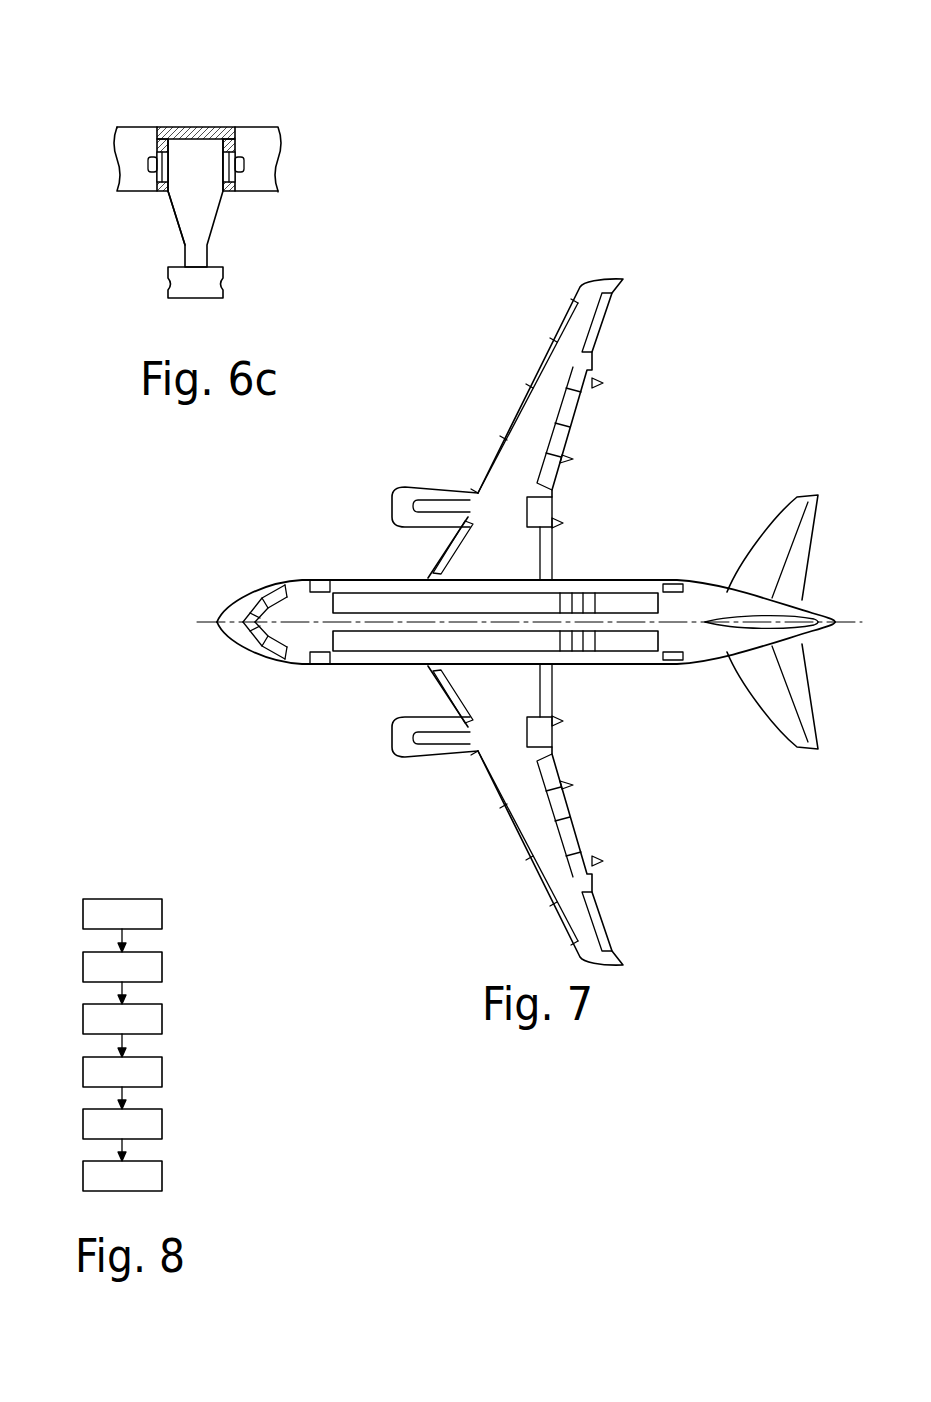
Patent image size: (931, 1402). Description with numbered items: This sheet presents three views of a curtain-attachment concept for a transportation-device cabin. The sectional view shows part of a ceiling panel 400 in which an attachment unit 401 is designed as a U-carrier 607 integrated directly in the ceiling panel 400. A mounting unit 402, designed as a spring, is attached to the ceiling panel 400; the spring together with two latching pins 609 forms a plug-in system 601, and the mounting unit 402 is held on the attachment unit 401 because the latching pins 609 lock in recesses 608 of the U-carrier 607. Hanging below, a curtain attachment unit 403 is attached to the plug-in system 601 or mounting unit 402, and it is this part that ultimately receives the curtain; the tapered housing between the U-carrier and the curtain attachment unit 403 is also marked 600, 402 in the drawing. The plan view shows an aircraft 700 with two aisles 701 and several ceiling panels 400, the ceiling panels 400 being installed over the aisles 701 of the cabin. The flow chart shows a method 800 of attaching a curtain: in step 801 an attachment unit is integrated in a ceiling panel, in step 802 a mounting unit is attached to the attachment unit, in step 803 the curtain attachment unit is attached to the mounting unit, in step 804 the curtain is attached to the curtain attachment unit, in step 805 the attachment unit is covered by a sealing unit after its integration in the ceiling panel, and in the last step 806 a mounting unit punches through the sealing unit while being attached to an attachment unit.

In FIG. 6C, the ceiling panel 400 is at (87, 180).
In FIG. 7, the ceiling panel 400 is at (560, 593).
In FIG. 6C, the attachment unit 401 is at (182, 128).
In FIG. 6C, the mounting unit 402 is at (203, 202).
In FIG. 6C, the curtain attachment unit 403 is at (213, 282).
In FIG. 6C, the tubular housing 600 is at (269, 203).
In FIG. 6C, the plug-in system 601 is at (172, 221).
In FIG. 6C, the U-carrier 607 is at (203, 138).
In FIG. 6C, the recesses 608 is at (157, 150).
In FIG. 6C, the latching pins 609 is at (245, 163).
In FIG. 7, the aircraft 700 is at (723, 372).
In FIG. 7, the aisles 701 is at (630, 592).
In FIG. 8, the method 800 is at (188, 1031).
In FIG. 8, the step of integrating attachment unit 801 is at (122, 914).
In FIG. 8, the step of attaching mounting unit 802 is at (122, 967).
In FIG. 8, the step of attaching curtain attachment unit 803 is at (122, 1019).
In FIG. 8, the step of attaching curtain 804 is at (122, 1072).
In FIG. 8, the step of covering attachment unit 805 is at (122, 1124).
In FIG. 8, the step of punching through sealing unit 806 is at (122, 1176).